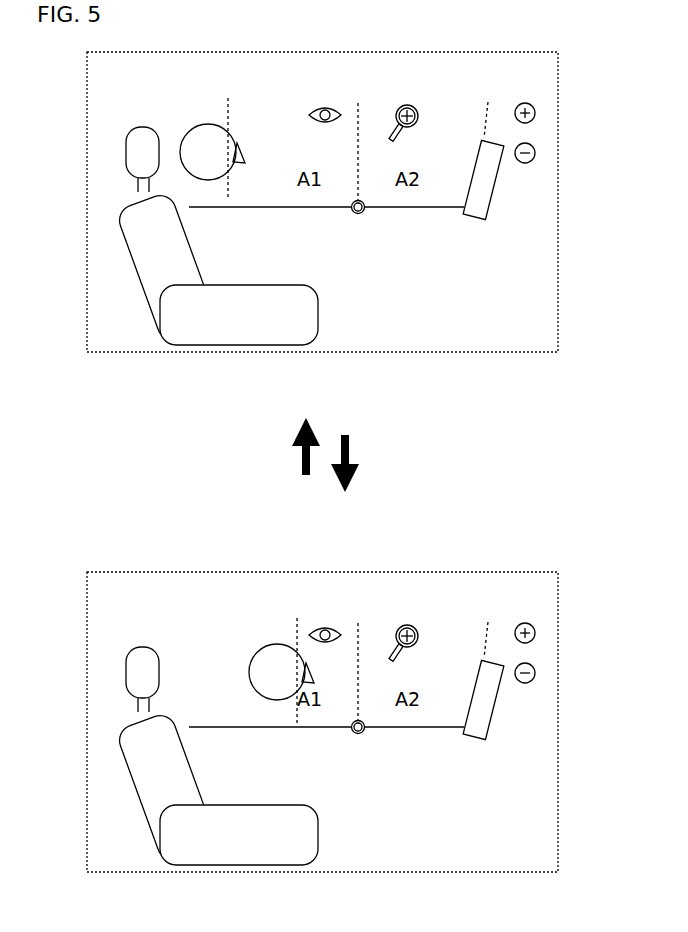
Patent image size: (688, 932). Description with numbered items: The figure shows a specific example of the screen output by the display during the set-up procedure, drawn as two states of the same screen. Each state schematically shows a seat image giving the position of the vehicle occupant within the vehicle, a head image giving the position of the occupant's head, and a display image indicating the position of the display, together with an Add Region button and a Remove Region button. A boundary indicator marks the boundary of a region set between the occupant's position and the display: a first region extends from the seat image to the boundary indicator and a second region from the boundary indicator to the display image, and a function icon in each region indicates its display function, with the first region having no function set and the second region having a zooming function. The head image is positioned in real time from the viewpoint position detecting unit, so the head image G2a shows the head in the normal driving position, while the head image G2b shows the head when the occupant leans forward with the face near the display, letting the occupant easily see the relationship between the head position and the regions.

The head image G2a is at (216, 124).
The head image G2b is at (273, 629).